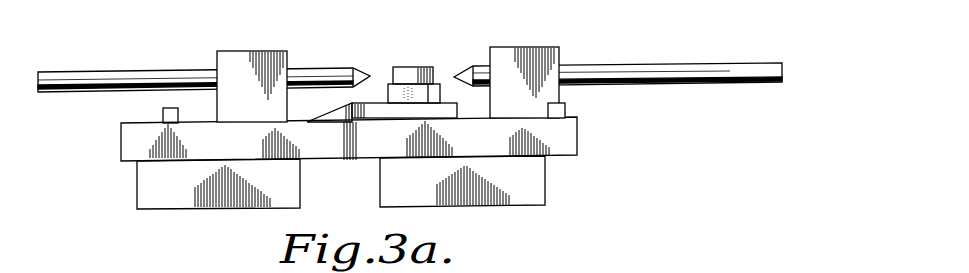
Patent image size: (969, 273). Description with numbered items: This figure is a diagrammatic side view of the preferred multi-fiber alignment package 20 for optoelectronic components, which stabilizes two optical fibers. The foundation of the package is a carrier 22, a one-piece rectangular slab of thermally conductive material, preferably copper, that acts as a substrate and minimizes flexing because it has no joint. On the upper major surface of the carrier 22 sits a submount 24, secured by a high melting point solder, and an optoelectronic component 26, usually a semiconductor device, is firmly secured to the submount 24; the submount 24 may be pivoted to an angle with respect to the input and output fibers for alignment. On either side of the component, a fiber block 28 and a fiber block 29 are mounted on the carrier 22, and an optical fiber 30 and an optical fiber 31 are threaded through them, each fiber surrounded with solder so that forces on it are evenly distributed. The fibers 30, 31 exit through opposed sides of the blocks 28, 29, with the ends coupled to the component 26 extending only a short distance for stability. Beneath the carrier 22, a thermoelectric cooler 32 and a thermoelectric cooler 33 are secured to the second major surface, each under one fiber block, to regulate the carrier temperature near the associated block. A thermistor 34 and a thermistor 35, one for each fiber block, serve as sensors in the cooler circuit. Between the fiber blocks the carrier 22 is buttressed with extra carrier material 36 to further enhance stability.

The multi-fiber alignment package 20 is at (590, 50).
The carrier 22 is at (578, 141).
The submount 24 is at (388, 92).
The optoelectronic component 26 is at (410, 72).
The fiber block 28 is at (231, 62).
The fiber block 29 is at (521, 60).
The optical fiber 30 is at (95, 72).
The optical fiber 31 is at (725, 66).
The thermoelectric cooler 32 is at (172, 200).
The thermoelectric cooler 33 is at (523, 197).
The thermistor 34 is at (166, 116).
The thermistor 35 is at (566, 109).
The carrier material 36 is at (350, 103).